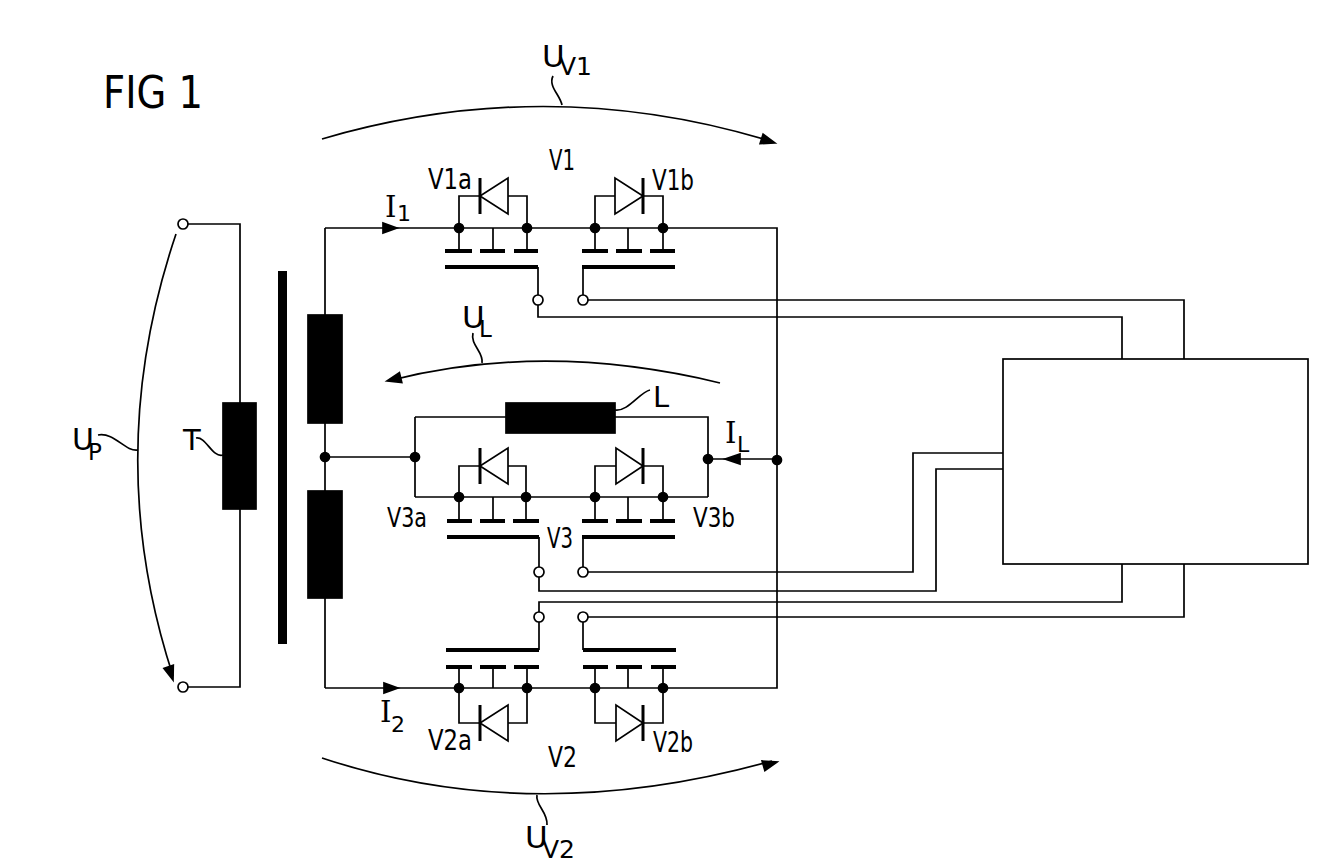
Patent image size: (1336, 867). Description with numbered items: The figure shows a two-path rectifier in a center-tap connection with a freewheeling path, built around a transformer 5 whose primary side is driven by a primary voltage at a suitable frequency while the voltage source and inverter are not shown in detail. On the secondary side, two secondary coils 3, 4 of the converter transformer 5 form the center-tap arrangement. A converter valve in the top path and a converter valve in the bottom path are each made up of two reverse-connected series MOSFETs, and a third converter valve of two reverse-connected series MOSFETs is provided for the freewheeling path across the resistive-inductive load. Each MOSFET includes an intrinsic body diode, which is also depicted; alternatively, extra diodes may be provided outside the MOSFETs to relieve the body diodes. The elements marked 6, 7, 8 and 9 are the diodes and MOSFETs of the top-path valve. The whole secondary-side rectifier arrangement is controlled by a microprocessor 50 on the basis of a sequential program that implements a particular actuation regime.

The secondary coil 3 is at (342, 572).
The secondary coil 4 is at (342, 337).
The transformer 5 is at (311, 189).
The freewheeling diode of transistor V1a 6 is at (490, 176).
The freewheeling diode of transistor V1b 7 is at (626, 178).
The transistor V1a (MOSFET) 8 is at (428, 255).
The transistor V1b (MOSFET) 9 is at (697, 256).
The microprocessor 50 is at (1261, 357).